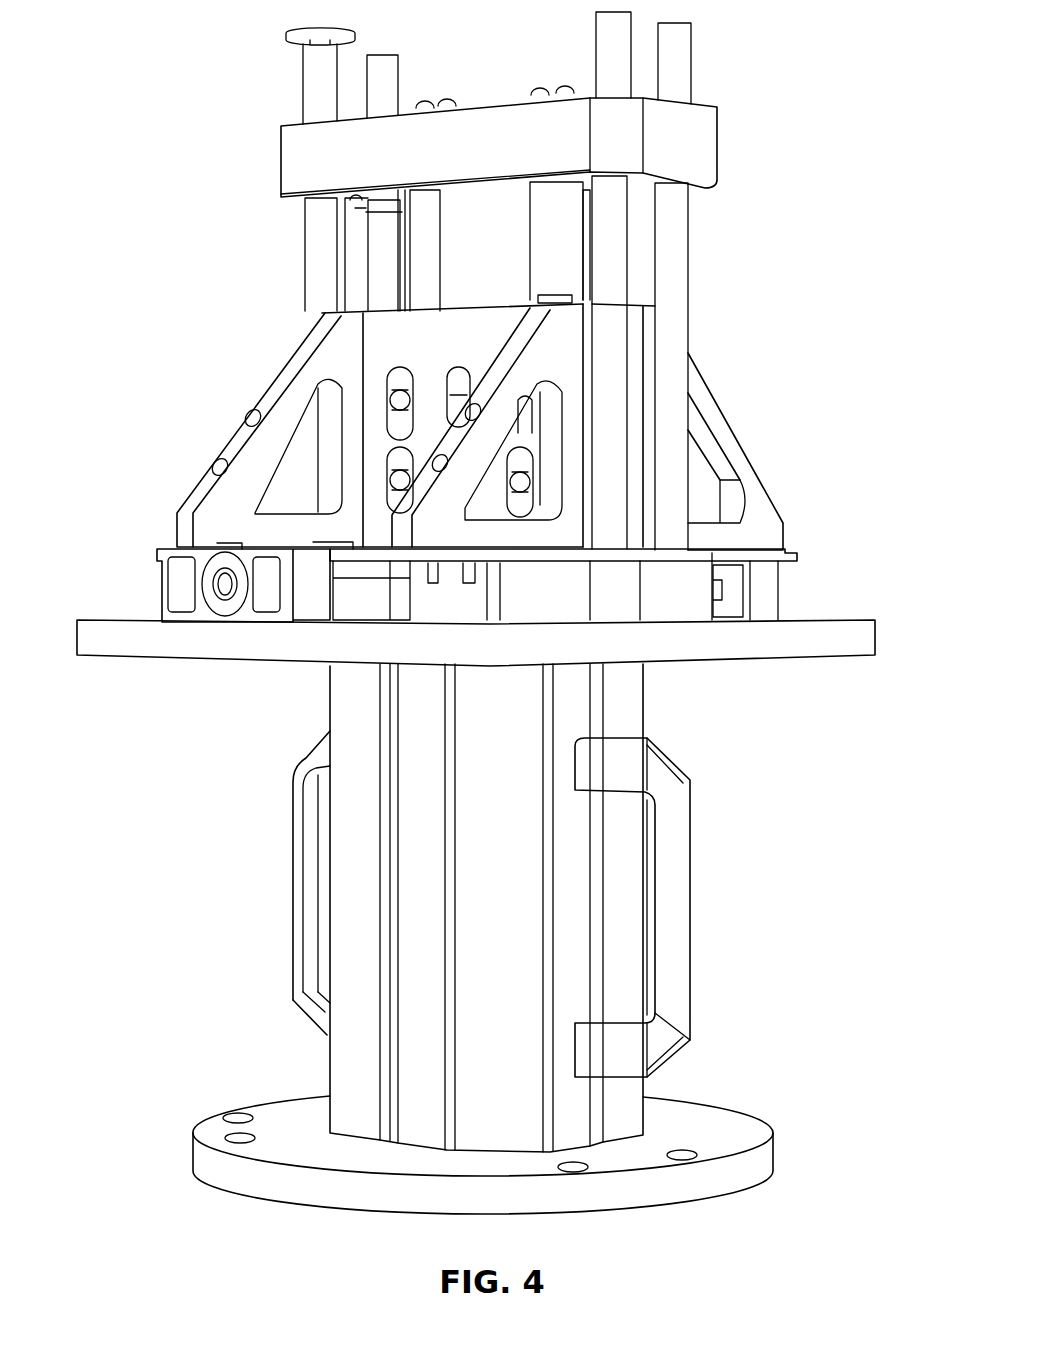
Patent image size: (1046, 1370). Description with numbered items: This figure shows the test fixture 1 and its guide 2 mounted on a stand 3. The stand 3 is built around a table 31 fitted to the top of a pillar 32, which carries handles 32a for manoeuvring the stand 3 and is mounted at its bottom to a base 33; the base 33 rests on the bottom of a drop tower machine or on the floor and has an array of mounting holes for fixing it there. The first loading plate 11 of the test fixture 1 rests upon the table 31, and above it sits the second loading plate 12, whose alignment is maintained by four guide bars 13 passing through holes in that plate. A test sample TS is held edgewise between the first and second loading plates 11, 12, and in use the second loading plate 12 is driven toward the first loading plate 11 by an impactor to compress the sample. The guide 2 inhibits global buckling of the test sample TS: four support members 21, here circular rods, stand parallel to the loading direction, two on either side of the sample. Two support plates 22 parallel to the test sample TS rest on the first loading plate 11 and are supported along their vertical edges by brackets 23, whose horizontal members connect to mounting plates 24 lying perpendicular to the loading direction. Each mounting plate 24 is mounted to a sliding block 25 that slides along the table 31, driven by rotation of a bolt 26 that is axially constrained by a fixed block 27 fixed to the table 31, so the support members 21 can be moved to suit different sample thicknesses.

The test fixture 1 is at (125, 135).
The guide 2 is at (105, 375).
The stand 3 is at (105, 888).
The first loading plate 11 is at (675, 597).
The second loading plate 12 is at (670, 137).
The guide bars 13 is at (386, 90).
The support members 21 is at (547, 205).
The test sample TS is at (510, 217).
The support plates 22 is at (395, 466).
The brackets 23 is at (547, 363).
The mounting plates 24 is at (783, 559).
The sliding block 25 is at (367, 600).
The bolt 26 is at (228, 560).
The fixed block 27 is at (178, 589).
The table 31 is at (693, 645).
The pillar 32 is at (520, 1084).
The handles 32a is at (312, 868).
The base 33 is at (732, 1142).